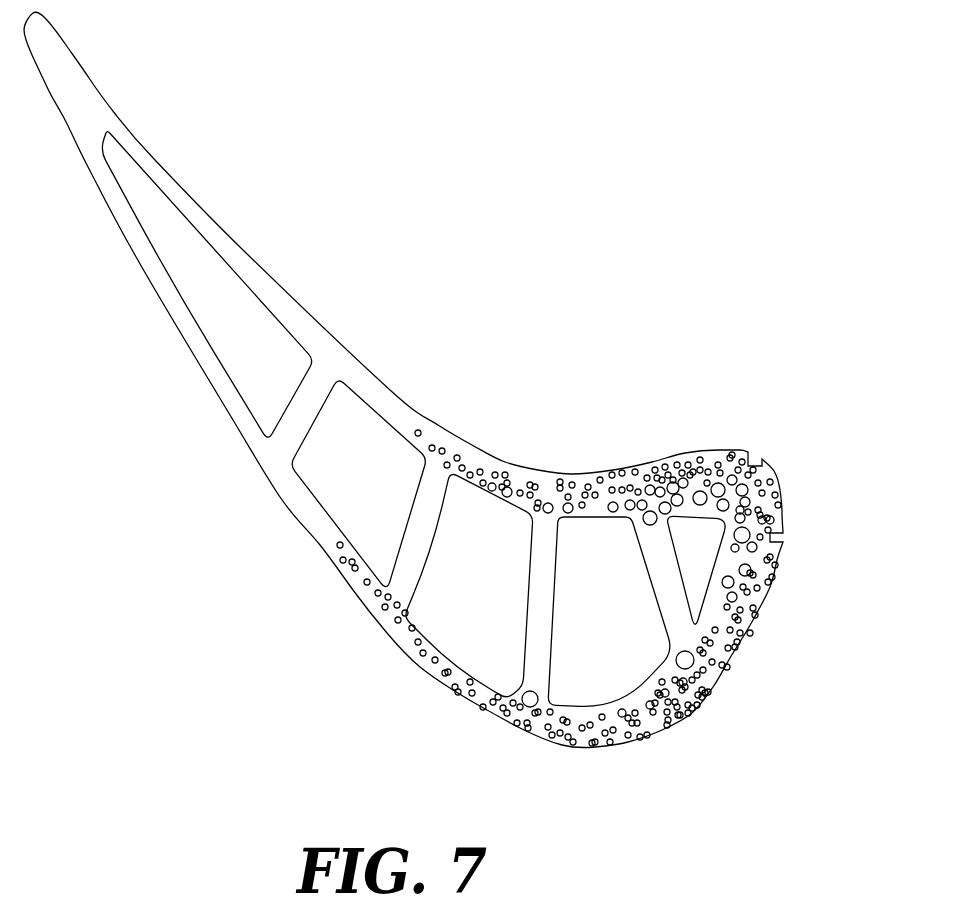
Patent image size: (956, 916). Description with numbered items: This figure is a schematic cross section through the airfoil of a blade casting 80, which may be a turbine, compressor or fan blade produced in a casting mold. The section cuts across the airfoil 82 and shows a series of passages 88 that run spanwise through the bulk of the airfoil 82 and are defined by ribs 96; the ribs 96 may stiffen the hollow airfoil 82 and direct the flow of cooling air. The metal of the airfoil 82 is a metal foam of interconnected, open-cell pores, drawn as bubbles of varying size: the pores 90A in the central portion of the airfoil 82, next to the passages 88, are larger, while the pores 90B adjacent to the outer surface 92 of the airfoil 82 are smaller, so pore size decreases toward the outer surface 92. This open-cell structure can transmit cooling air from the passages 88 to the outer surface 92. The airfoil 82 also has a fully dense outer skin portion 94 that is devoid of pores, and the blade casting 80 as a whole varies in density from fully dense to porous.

The blade casting 80 is at (530, 300).
The airfoil 82 is at (687, 713).
The passages 88 is at (202, 267).
The pores 90A is at (650, 511).
The pores 90B is at (560, 473).
The outer surface 92 is at (470, 707).
The fully dense outer skin portion 94 is at (210, 390).
The ribs 96 is at (302, 388).